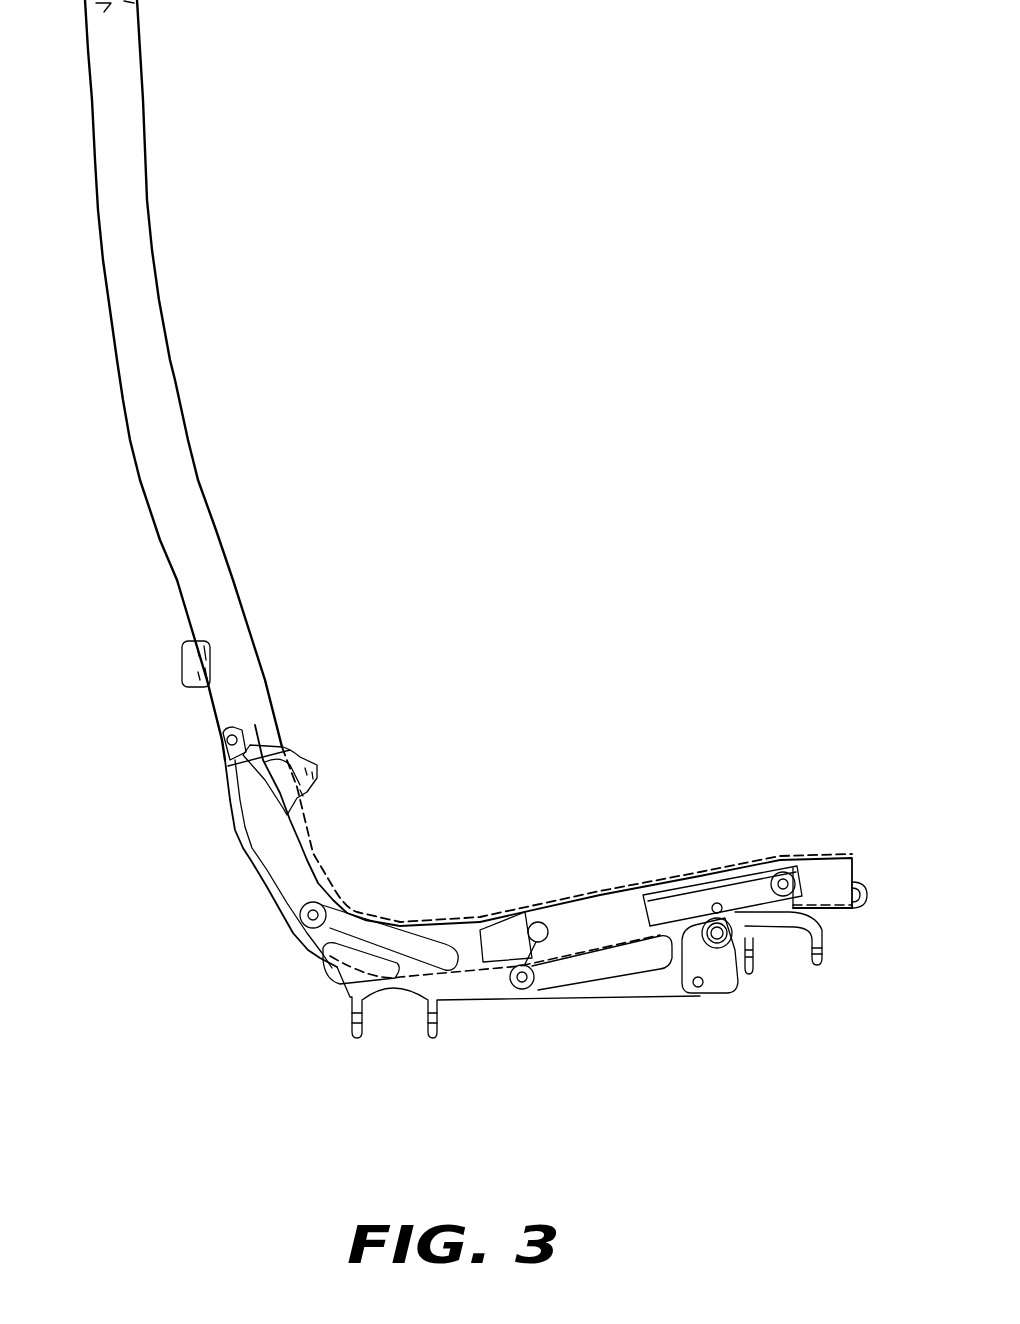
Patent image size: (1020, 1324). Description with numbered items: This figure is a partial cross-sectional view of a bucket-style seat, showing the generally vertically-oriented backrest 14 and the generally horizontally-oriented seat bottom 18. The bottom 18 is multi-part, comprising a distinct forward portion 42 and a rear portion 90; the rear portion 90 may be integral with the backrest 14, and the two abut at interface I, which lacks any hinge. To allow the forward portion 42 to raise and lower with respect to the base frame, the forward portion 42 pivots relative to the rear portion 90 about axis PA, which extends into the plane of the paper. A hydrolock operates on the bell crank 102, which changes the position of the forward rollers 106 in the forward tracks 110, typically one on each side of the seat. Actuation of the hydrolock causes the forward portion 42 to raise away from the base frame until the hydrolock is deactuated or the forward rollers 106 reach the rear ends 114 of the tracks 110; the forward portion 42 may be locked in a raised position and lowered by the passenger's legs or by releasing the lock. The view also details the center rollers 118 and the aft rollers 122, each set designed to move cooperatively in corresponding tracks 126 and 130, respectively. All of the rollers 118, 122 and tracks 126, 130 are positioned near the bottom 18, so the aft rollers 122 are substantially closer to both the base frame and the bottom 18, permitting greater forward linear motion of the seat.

The backrest 14 is at (220, 548).
The seat bottom 18 is at (804, 763).
The forward portion 42 is at (667, 870).
The rear portion 90 is at (415, 920).
The bell crank 102 is at (735, 982).
The forward rollers 106 is at (793, 868).
The forward tracks 110 is at (690, 903).
The rear ends 114 is at (640, 930).
The center rollers 118 is at (522, 990).
The aft rollers 122 is at (300, 920).
The tracks 126 is at (570, 972).
The tracks 130 is at (332, 960).
The axis PA is at (539, 922).
The interface I is at (333, 893).